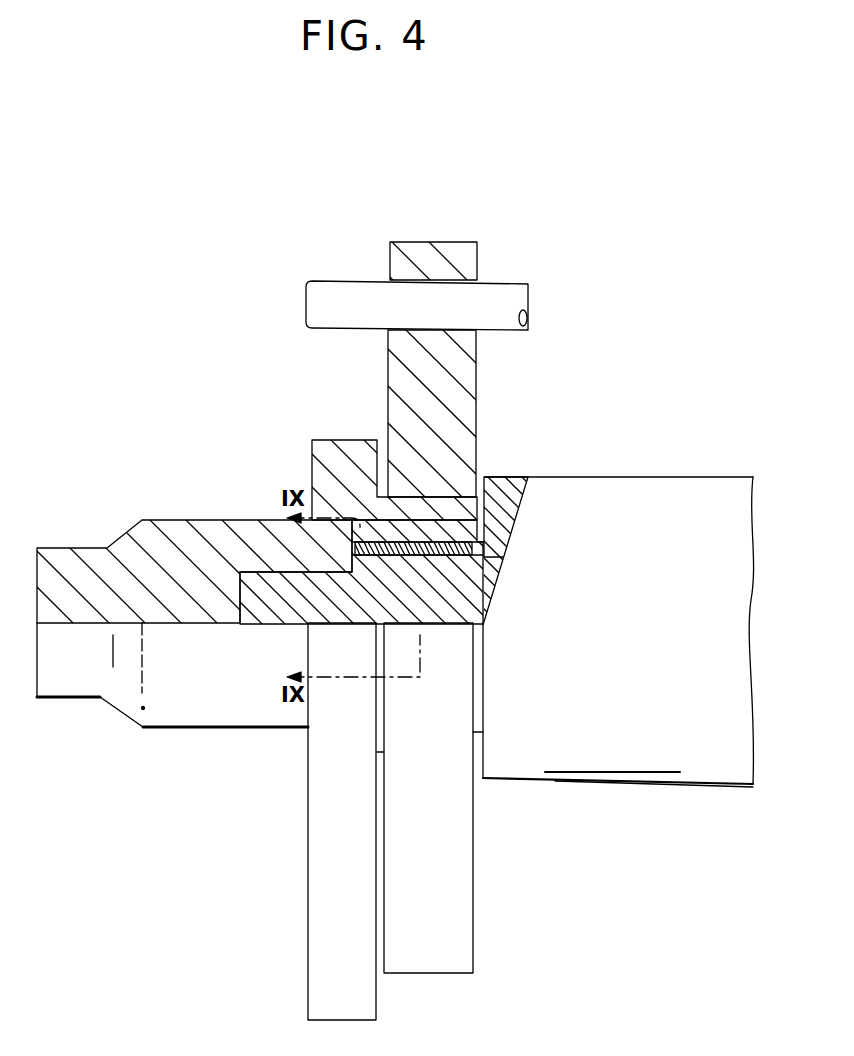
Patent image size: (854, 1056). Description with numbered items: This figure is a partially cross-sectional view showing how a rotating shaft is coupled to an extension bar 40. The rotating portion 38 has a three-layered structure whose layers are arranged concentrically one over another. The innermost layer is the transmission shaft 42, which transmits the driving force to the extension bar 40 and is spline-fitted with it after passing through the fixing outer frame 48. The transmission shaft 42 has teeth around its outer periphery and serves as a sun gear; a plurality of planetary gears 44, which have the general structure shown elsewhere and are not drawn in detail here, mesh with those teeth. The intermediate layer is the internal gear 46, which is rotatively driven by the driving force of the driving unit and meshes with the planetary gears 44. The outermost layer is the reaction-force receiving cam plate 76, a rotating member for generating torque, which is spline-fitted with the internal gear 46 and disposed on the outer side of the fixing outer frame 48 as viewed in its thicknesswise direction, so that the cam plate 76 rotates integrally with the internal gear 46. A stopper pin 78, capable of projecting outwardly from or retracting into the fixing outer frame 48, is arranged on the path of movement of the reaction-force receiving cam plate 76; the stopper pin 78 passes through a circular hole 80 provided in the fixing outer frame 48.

The rotating portion 38 is at (552, 472).
The extension bar 40 is at (182, 535).
The transmission shaft 42 is at (290, 595).
The planetary gears 44 is at (470, 542).
The internal gear 46 is at (413, 497).
The fixing outer frame 48 is at (478, 250).
The reaction-force receiving cam plate 76 is at (325, 828).
The stopper pin 78 is at (340, 293).
The circular hole 80 is at (437, 283).